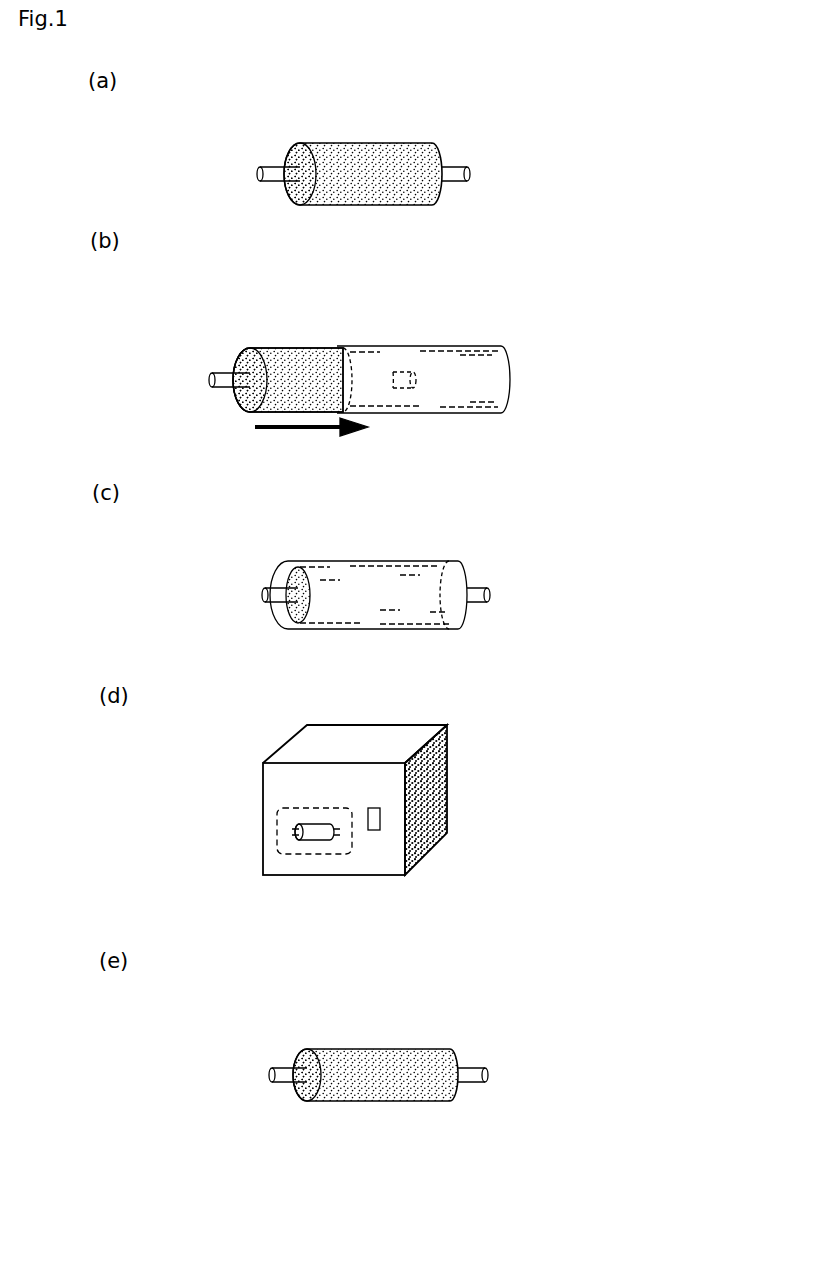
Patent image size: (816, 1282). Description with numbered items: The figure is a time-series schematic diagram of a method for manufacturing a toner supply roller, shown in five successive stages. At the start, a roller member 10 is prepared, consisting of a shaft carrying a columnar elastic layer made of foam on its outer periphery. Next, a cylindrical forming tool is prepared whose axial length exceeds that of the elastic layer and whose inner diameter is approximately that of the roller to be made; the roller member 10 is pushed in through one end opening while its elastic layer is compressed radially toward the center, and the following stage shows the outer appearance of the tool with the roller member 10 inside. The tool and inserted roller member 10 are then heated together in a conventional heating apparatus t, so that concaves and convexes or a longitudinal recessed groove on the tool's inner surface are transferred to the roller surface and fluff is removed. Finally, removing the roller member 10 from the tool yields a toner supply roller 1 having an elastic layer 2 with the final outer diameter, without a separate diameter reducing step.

The roller member 10 is at (345, 127).
The heating apparatus t is at (447, 787).
The toner supply roller 1 is at (363, 1031).
The elastic layer 2 is at (415, 1053).